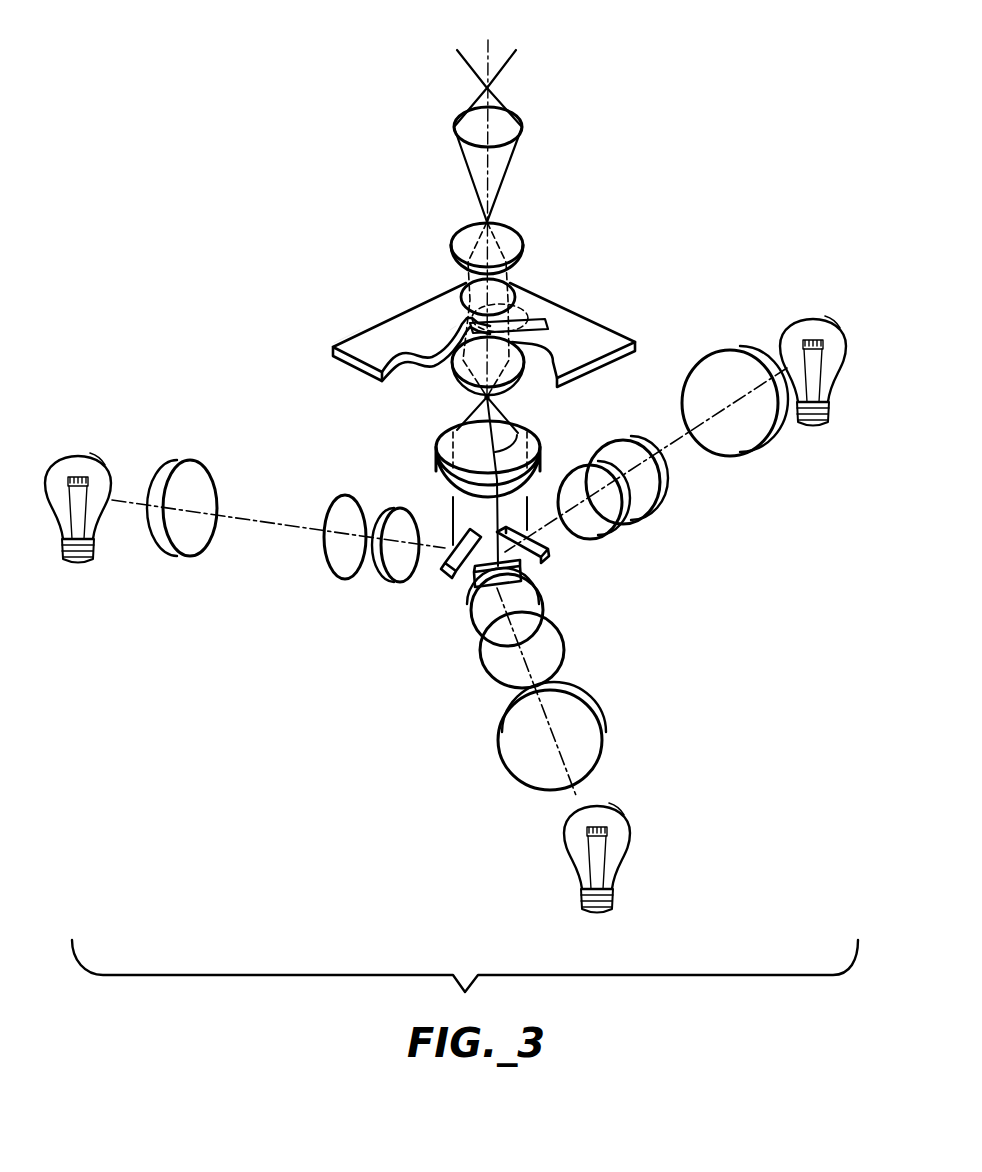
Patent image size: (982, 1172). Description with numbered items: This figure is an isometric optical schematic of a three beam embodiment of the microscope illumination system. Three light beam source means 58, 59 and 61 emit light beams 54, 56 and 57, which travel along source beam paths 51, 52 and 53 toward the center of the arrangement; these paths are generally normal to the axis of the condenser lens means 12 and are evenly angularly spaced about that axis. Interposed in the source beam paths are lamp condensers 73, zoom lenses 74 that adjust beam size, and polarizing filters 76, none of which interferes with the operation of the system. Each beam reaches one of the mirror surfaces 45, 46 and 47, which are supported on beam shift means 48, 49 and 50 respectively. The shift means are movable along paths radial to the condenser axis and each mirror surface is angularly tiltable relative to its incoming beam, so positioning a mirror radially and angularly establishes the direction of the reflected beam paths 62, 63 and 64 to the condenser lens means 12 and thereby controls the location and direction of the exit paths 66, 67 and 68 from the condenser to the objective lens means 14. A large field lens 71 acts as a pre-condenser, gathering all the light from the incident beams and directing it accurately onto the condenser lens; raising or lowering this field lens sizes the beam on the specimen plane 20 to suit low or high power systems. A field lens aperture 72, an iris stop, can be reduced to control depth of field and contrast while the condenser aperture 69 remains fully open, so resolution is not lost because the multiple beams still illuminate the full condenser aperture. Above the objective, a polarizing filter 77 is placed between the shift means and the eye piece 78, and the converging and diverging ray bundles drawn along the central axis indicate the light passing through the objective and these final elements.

The condenser lens means 12 is at (570, 325).
The objective lens means 14 is at (460, 290).
The specimen plane 20 is at (363, 335).
The mirror surface 45 is at (460, 533).
The mirror surface 46 is at (552, 552).
The mirror surface 47 is at (478, 583).
The beam shift means 48 is at (445, 544).
The beam shift means 49 is at (547, 562).
The beam shift means 50 is at (468, 590).
The source beam path 51 is at (280, 530).
The source beam path 52 is at (673, 448).
The source beam path 53 is at (575, 792).
The light beam 54 is at (233, 514).
The light beam 56 is at (667, 446).
The light beam 57 is at (553, 760).
The light beam source means 58 is at (95, 460).
The light beam source means 59 is at (805, 320).
The light beam source means 61 is at (630, 822).
The beam path 62 is at (470, 408).
The beam path 63 is at (510, 405).
The beam path 64 is at (517, 433).
The exit path 66 is at (530, 318).
The exit path 67 is at (453, 325).
The exit path 68 is at (520, 305).
The condenser aperture 69 is at (440, 364).
The field lens 71 is at (437, 440).
The field lens aperture 72 is at (438, 470).
The lamp condenser 73 is at (203, 478).
The zoom lens 74 is at (348, 498).
The polarizing filter 76 is at (400, 505).
The polarizing filter 77 is at (466, 232).
The eye piece 78 is at (465, 120).